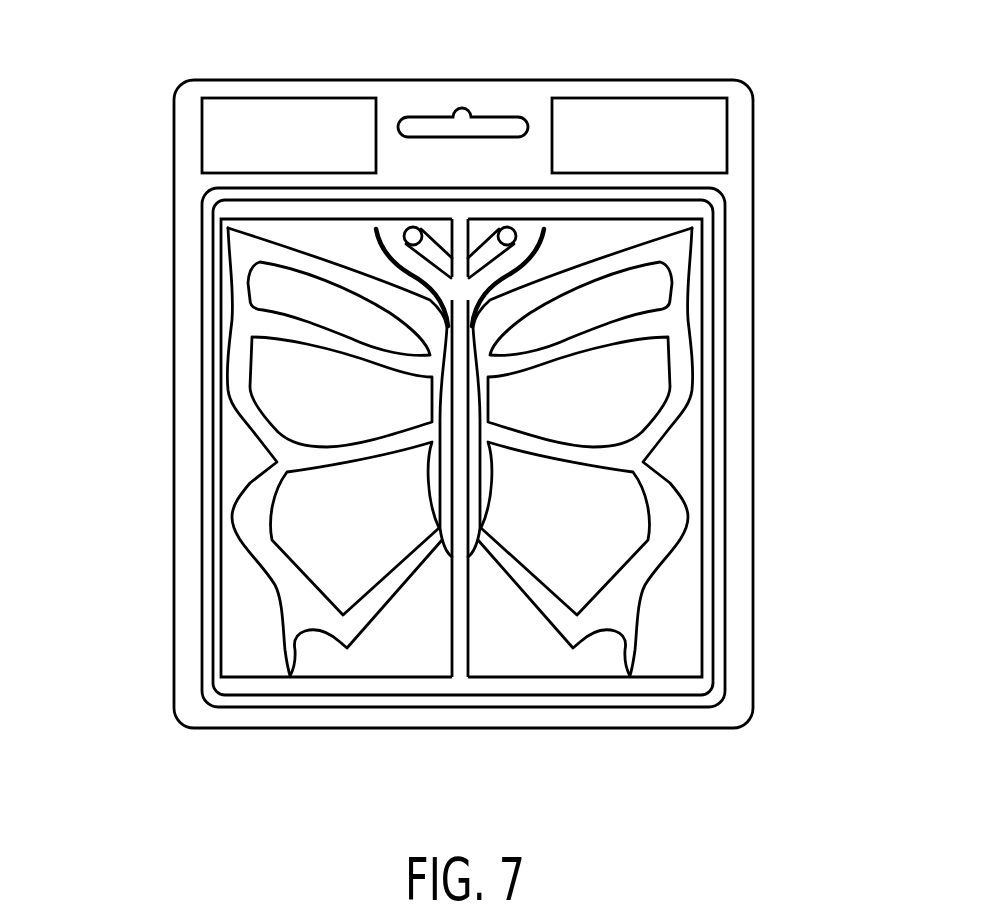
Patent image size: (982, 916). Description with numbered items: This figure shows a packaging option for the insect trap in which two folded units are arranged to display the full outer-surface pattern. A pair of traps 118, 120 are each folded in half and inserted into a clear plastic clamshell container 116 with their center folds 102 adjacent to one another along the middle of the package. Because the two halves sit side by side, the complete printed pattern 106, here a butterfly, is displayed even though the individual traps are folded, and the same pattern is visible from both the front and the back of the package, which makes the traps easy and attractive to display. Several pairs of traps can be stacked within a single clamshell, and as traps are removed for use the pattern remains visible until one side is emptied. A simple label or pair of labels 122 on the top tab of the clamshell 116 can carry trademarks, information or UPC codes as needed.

The vertical fold 102 is at (452, 676).
The pattern 106 is at (253, 482).
The clamshell container 116 is at (755, 282).
The trap 118 is at (313, 676).
The trap 120 is at (593, 676).
The label 122 is at (578, 98).